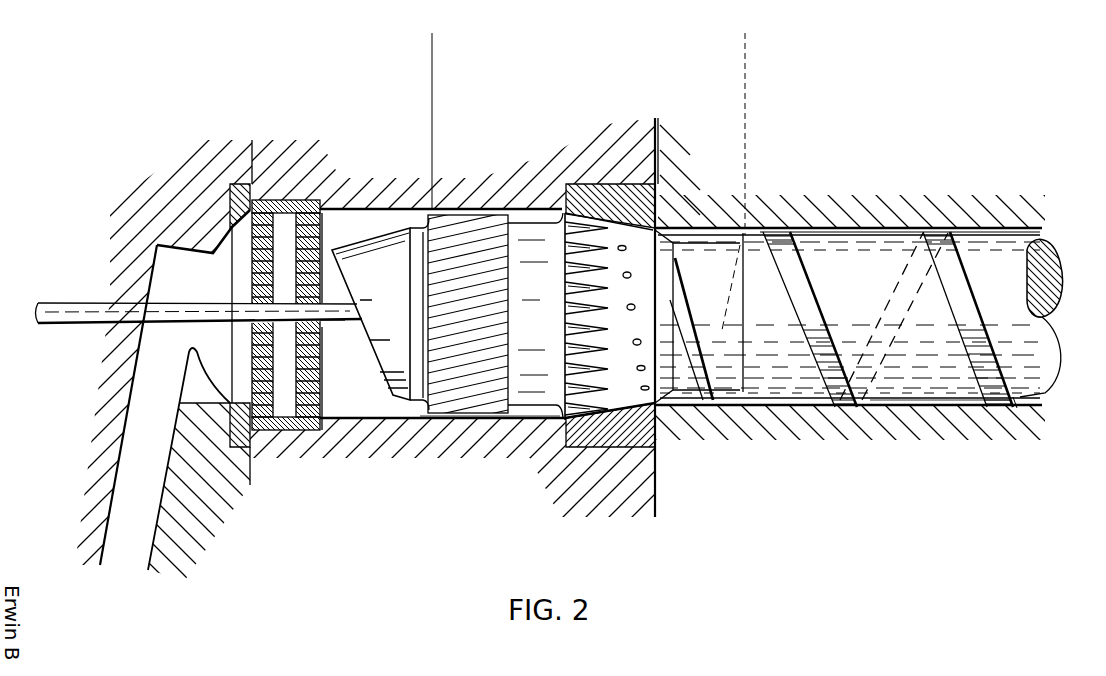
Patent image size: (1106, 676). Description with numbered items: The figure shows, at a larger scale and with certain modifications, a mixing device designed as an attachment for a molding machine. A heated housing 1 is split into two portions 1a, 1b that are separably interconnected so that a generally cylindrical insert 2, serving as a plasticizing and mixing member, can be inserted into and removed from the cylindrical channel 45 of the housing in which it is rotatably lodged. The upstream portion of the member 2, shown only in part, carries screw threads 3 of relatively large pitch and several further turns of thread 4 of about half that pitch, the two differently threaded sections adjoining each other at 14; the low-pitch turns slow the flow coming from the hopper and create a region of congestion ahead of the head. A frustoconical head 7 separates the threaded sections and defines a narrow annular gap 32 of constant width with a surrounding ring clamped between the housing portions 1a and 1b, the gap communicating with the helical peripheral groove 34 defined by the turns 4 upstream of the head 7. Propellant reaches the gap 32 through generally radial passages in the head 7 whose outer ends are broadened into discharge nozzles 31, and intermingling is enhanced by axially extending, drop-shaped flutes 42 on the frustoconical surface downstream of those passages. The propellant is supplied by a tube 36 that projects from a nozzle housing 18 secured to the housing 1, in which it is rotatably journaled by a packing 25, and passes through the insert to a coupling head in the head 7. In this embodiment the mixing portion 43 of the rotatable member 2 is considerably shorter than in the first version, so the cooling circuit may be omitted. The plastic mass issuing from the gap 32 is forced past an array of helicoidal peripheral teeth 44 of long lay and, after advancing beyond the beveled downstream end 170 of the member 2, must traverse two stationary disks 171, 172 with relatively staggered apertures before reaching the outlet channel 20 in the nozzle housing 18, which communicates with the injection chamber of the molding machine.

The heated housing 1 is at (888, 207).
The housing portion 1a is at (543, 173).
The housing portion 1b is at (965, 207).
The cylindrical insert 2 is at (1072, 279).
The screw threads 3 is at (1000, 404).
The turns of thread 4 is at (700, 385).
The frustoconical head 7 is at (655, 228).
The junction of threaded sections 14 is at (747, 380).
The nozzle housing 18 is at (187, 222).
The channel 20 is at (130, 540).
The packing 25 is at (343, 321).
The discharge nozzles 31 is at (636, 307).
The annular gap 32 is at (603, 418).
The helical peripheral groove 34 is at (818, 237).
The tube 36 is at (63, 318).
The flutes 42 is at (577, 215).
The mixing portion 43 is at (745, 48).
The helicoidal peripheral teeth 44 is at (470, 226).
The cylindrical channel 45 is at (477, 418).
The beveled downstream end 170 is at (385, 395).
The stationary disk 171 is at (312, 200).
The stationary disk 172 is at (263, 433).